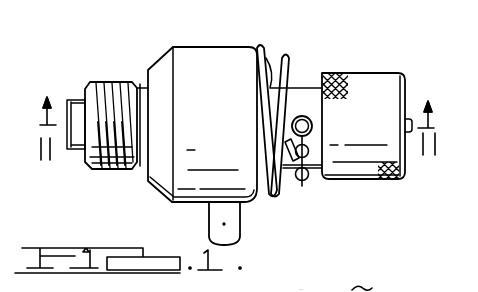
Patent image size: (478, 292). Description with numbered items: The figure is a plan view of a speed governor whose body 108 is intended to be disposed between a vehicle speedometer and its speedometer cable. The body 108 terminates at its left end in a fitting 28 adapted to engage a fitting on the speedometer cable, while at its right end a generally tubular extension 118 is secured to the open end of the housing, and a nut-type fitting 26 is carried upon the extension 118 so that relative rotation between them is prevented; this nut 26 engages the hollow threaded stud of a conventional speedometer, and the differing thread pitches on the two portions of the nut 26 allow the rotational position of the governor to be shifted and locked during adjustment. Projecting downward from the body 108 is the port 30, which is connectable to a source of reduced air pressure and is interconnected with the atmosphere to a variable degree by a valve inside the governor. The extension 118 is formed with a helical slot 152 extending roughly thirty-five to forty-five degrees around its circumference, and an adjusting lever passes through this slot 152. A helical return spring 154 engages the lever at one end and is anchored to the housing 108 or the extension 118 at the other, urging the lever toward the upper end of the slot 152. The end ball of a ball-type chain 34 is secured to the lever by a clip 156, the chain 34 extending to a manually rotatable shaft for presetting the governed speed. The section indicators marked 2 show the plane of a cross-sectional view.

The section line 2- 2 is at (241, 128).
The fitting 26 is at (373, 80).
The fitting 28 is at (107, 80).
The port 30 is at (214, 225).
The ball-type chain 34 is at (309, 177).
The governor body 108 is at (217, 50).
The tubular extension 118 is at (298, 93).
The helical slot 152 is at (288, 158).
The helical return spring 154 is at (290, 58).
The clip 156 is at (313, 122).